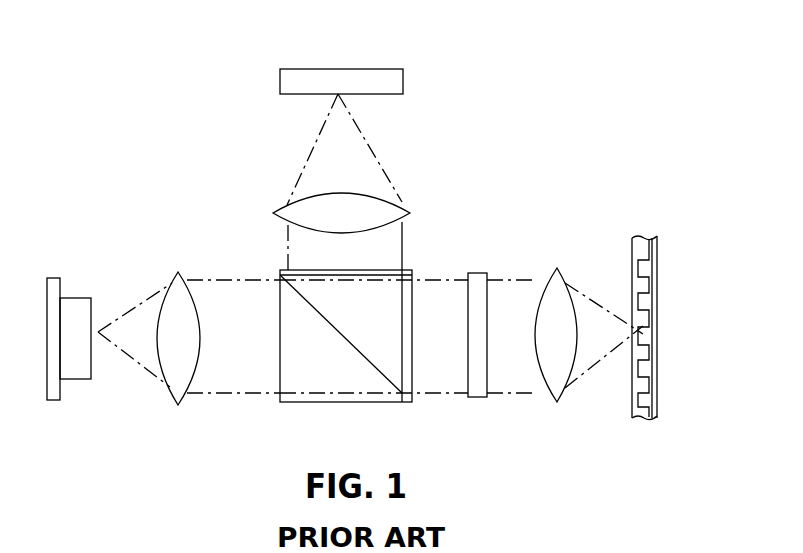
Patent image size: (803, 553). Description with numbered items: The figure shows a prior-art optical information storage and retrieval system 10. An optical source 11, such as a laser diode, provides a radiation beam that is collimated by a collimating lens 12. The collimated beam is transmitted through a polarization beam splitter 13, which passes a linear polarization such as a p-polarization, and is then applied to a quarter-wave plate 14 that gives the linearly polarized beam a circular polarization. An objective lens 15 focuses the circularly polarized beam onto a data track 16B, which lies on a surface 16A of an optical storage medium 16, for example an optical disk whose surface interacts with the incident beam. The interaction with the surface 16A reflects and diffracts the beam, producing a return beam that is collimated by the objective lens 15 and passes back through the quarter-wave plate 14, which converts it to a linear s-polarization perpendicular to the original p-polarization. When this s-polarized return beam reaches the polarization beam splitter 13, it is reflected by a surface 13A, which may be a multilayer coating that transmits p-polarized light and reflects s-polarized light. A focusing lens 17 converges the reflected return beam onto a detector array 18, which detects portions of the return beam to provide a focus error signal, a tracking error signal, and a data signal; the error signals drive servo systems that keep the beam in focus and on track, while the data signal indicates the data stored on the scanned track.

The optical information storage and retrieval system 10 is at (128, 118).
The optical source 11 is at (74, 298).
The collimating lens 12 is at (178, 272).
The polarization beam splitter 13 is at (280, 338).
The surface 13A is at (367, 363).
The quarter-wave plate 14 is at (480, 273).
The objective lens 15 is at (557, 268).
The optical storage medium 16 is at (667, 223).
The surface 16A is at (653, 352).
The data track 16B is at (637, 398).
The focusing lens 17 is at (273, 213).
The detector array 18 is at (357, 69).